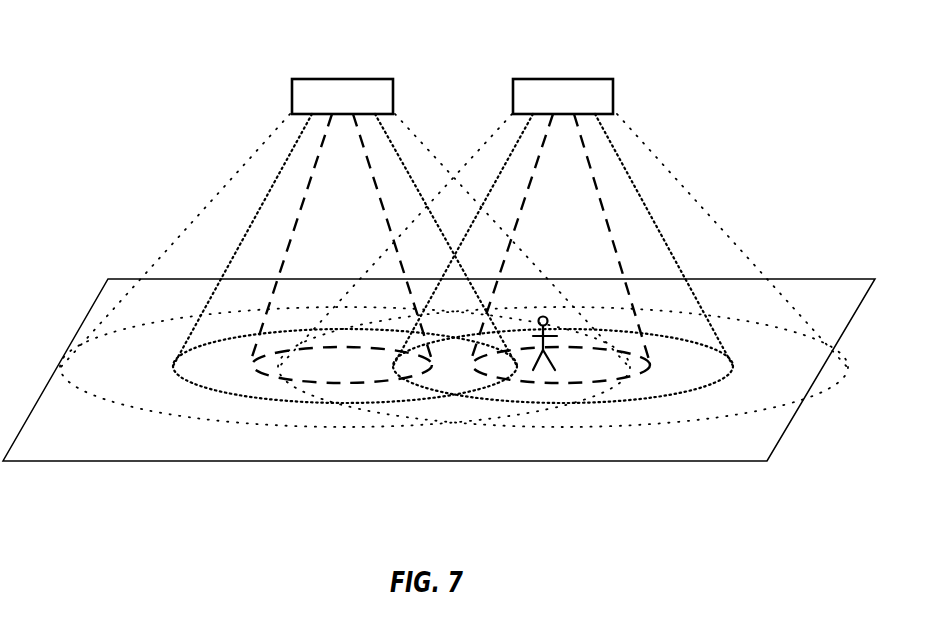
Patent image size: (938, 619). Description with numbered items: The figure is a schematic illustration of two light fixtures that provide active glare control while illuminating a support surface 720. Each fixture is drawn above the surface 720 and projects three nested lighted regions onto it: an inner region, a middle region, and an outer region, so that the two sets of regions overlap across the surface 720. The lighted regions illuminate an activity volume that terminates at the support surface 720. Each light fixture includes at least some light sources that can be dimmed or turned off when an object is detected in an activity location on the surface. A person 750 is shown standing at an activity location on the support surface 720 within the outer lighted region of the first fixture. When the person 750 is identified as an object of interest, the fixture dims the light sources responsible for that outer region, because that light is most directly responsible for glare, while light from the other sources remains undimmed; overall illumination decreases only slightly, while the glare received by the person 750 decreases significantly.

The surface 720 is at (833, 297).
The person 750 is at (540, 358).